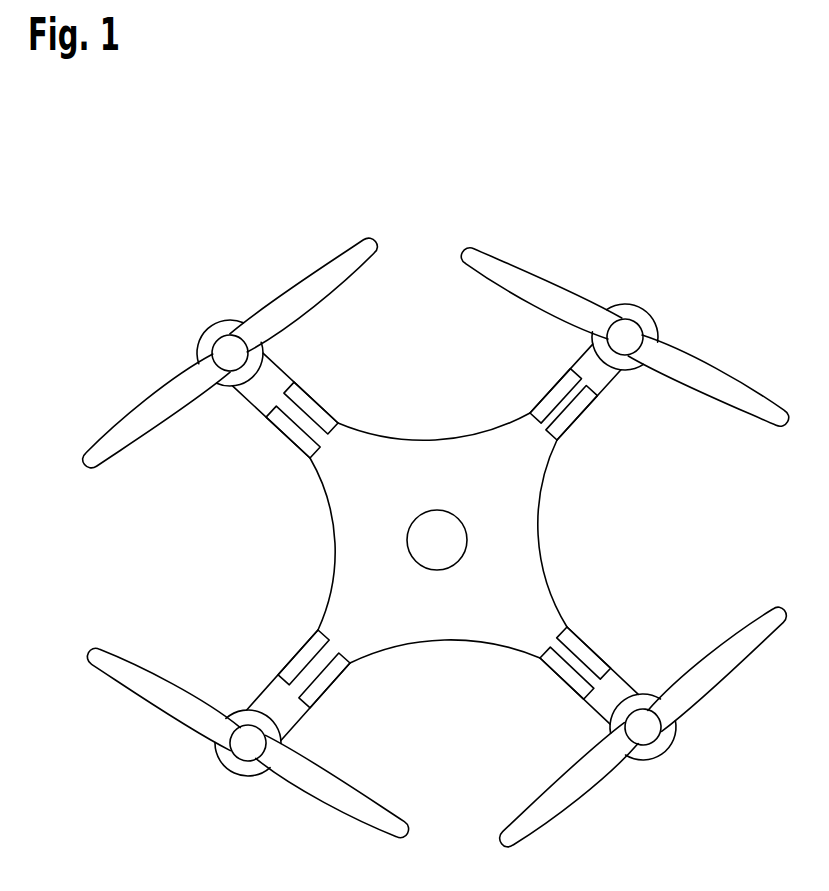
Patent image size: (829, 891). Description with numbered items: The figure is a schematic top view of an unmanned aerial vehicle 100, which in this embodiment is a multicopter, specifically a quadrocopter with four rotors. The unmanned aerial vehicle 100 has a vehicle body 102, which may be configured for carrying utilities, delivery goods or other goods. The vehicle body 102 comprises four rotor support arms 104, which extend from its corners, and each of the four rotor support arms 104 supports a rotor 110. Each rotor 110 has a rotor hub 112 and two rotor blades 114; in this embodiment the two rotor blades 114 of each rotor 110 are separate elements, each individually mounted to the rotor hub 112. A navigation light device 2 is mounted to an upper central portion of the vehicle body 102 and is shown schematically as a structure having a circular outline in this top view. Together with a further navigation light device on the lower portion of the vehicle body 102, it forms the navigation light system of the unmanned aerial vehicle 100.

The unmanned aerial vehicle 100 is at (281, 194).
The vehicle body 102 is at (530, 498).
The rotor support arm 104 is at (272, 403).
The rotor 110 is at (437, 540).
The rotor hub 112 is at (232, 353).
The rotor blade 114 is at (145, 415).
The navigation light device 2 is at (437, 510).